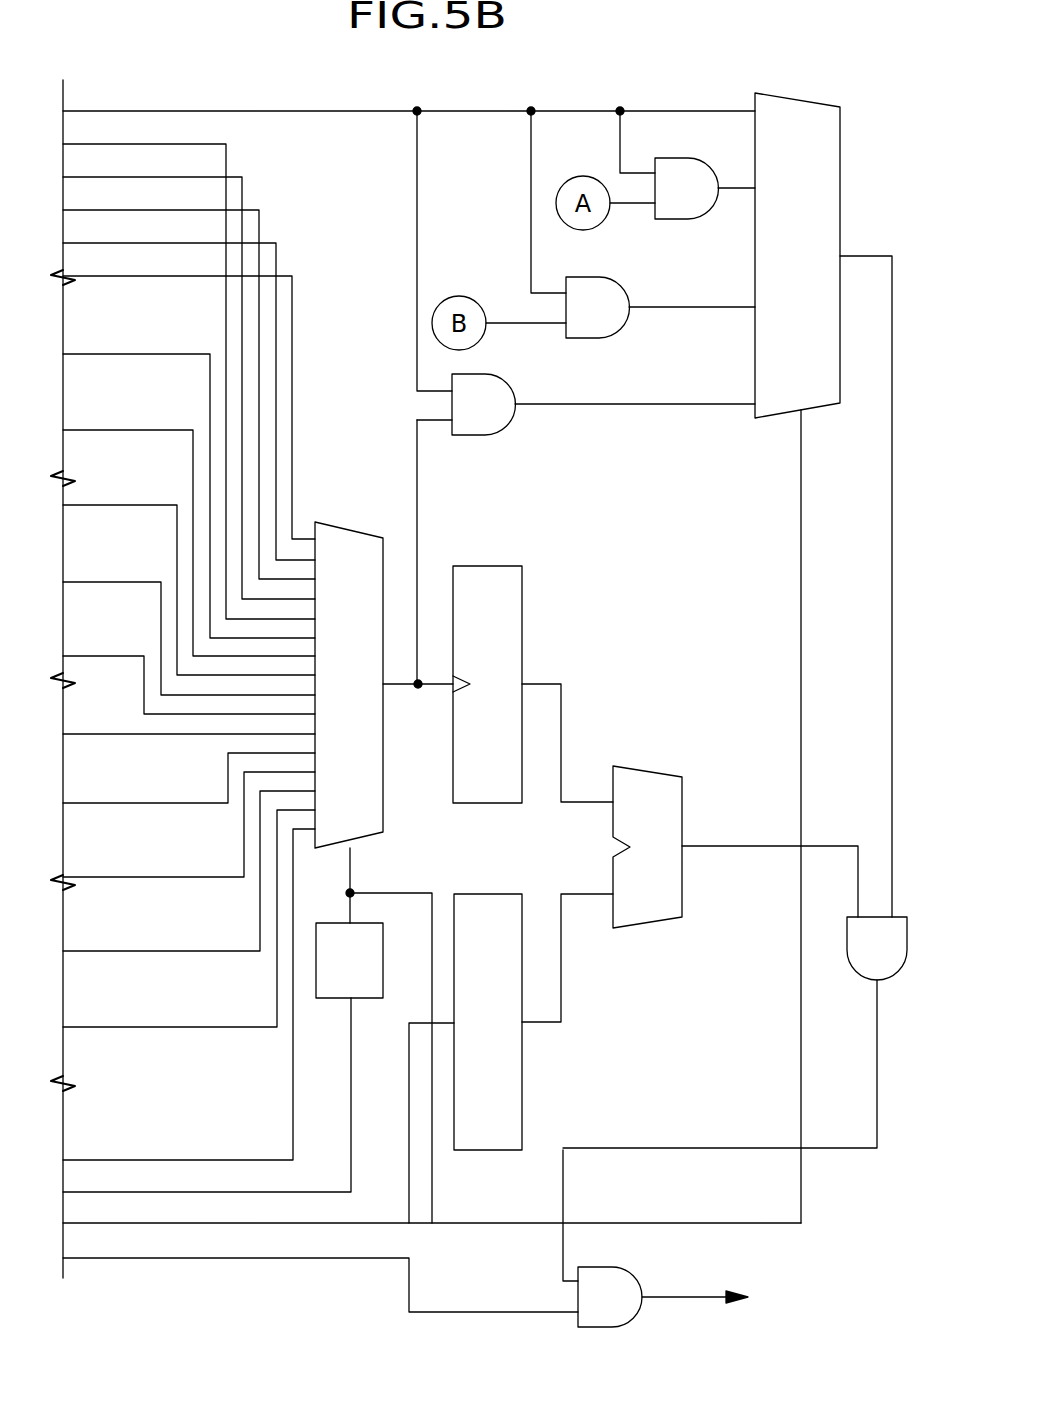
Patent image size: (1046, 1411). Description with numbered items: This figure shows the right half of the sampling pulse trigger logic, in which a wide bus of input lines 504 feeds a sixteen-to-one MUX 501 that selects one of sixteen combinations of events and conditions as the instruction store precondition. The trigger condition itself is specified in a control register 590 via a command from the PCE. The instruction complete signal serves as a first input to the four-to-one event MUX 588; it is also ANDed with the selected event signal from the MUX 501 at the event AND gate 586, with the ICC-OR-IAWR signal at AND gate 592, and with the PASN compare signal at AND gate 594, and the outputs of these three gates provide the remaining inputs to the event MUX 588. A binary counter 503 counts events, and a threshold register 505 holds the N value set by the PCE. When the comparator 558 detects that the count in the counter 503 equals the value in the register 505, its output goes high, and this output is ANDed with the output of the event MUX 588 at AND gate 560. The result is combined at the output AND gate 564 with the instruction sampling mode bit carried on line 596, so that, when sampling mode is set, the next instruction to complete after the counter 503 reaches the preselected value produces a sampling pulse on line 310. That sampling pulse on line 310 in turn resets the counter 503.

The bus 504 is at (270, 111).
The 16:1 MUX 501 is at (372, 738).
The binary counter 503 is at (490, 566).
The threshold register 505 is at (520, 1059).
The comparator 558 is at (675, 892).
The AND gate 560 is at (735, 1032).
The output AND gate 564 is at (352, 1238).
The event AND gate 586 is at (603, 404).
The event MUX 588 is at (773, 292).
The control register 590 is at (341, 985).
The AND gate 592 is at (682, 165).
The AND gate 594 is at (620, 224).
The IS mode bit line 596 is at (336, 1258).
The sampling pulse line 310 is at (700, 1297).